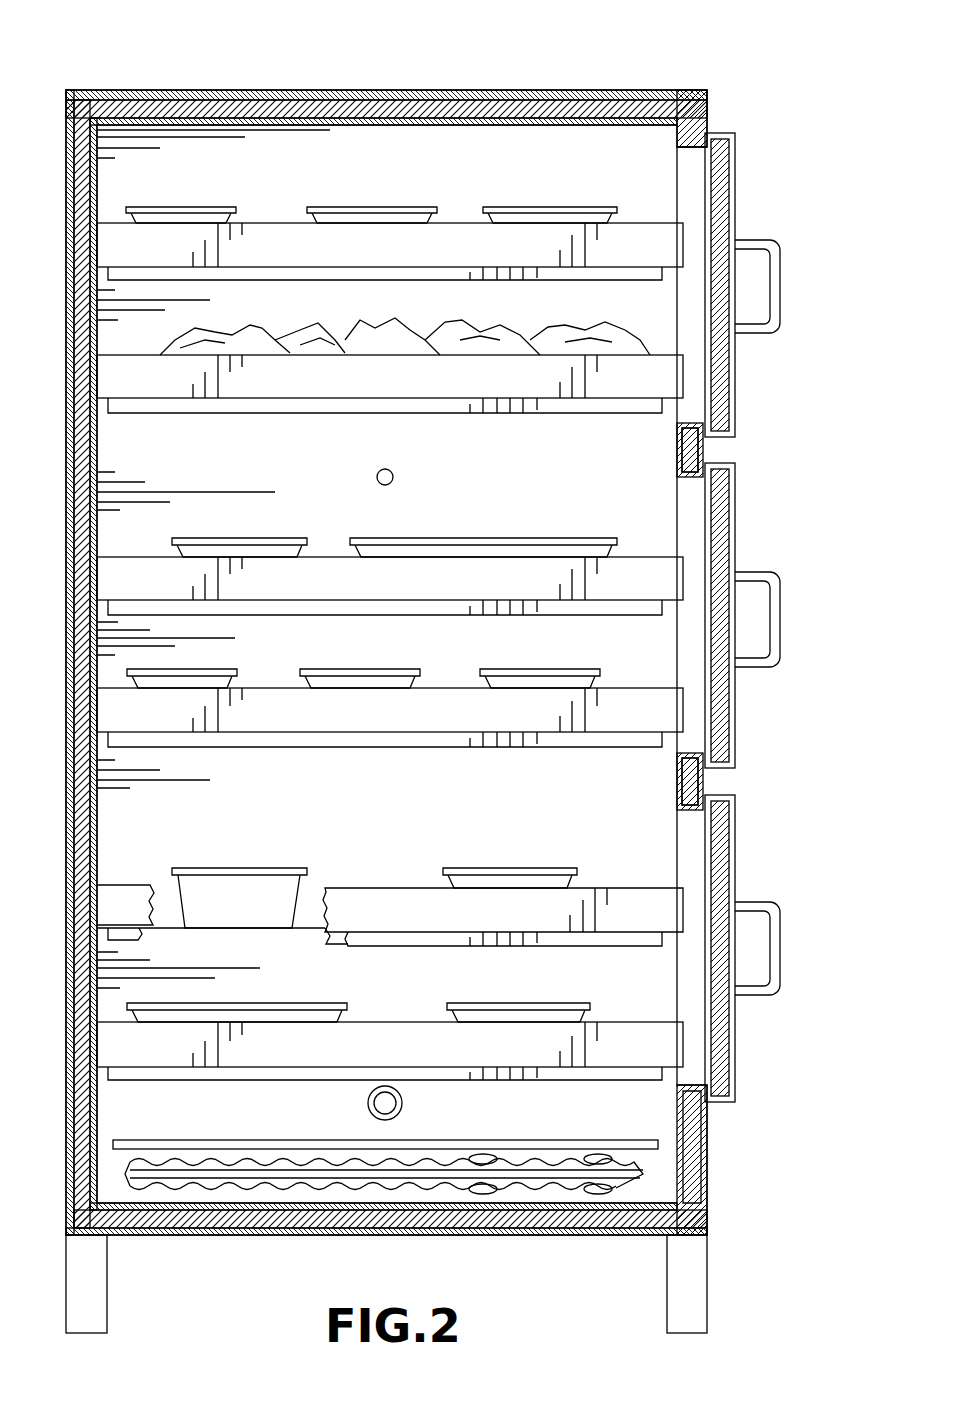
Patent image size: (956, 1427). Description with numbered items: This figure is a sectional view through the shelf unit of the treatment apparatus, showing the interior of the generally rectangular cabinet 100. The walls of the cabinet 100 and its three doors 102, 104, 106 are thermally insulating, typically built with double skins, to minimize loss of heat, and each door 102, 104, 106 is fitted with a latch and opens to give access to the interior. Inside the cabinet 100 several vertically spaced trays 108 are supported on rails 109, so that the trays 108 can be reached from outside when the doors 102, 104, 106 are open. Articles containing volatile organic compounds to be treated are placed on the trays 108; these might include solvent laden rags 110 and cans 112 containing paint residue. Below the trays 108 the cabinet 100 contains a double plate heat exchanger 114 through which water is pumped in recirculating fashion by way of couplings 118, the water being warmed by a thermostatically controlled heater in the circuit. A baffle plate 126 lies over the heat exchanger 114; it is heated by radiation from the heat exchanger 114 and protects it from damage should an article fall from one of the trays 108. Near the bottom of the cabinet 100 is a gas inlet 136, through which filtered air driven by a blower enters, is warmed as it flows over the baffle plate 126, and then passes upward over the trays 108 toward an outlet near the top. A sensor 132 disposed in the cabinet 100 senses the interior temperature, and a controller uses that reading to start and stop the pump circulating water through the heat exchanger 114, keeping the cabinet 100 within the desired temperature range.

The cabinet 100 is at (205, 84).
The door 102 is at (737, 385).
The door 104 is at (737, 700).
The door 106 is at (737, 1040).
The trays 108 is at (535, 390).
The rails 109 is at (245, 407).
The solvent laden rags 110 is at (420, 332).
The cans 112 is at (214, 895).
The double plate heat exchanger 114 is at (170, 1162).
The couplings 118 is at (483, 1194).
The baffle plate 126 is at (332, 1138).
The sensor 132 is at (393, 477).
The gas inlet 136 is at (402, 1103).